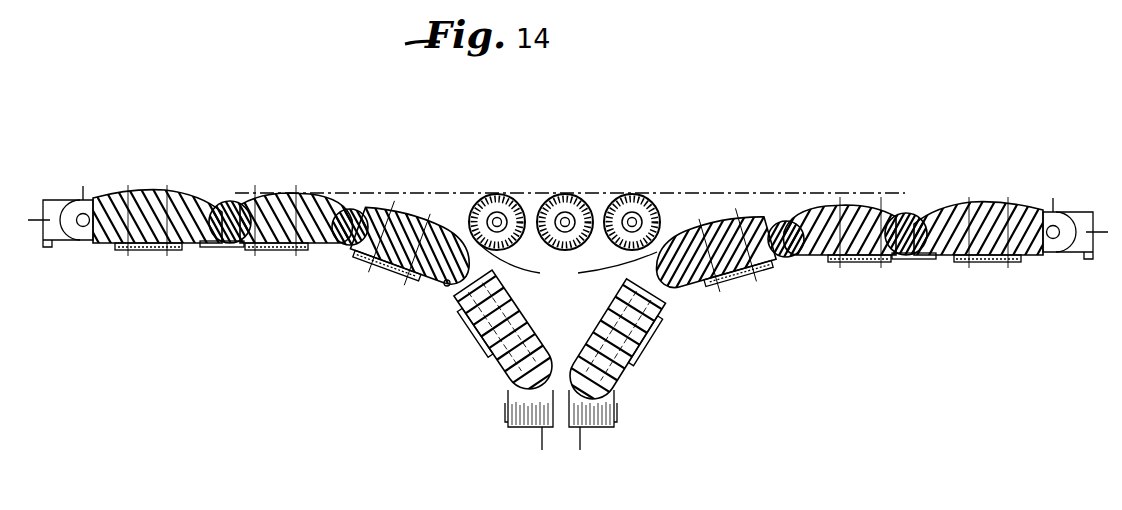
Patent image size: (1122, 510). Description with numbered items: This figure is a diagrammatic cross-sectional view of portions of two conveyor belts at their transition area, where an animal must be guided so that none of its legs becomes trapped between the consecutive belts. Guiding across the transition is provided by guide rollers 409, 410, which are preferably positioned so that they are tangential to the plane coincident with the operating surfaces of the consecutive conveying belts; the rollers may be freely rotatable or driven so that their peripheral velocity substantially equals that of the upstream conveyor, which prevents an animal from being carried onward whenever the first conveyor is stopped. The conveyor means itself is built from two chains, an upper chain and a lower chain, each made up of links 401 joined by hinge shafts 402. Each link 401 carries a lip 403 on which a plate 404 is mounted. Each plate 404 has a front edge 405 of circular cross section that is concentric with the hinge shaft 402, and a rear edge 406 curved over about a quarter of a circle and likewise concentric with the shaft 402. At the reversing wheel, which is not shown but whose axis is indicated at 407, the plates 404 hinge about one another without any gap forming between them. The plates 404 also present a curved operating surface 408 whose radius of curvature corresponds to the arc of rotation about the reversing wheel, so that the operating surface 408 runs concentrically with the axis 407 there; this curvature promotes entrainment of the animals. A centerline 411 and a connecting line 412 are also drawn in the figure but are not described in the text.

The link 401 is at (53, 241).
The hinge shaft 402 is at (84, 230).
The lip 403 is at (276, 250).
The plate 404 is at (277, 194).
The front edge 405 is at (212, 246).
The rear edge 406 is at (231, 200).
The axis of the reversing wheel 407 is at (394, 196).
The curved operating surface 408 is at (146, 190).
The guide roller 409 is at (498, 194).
The guide roller 410 is at (567, 194).
The center line 411 is at (432, 188).
The roller support curve 412 is at (567, 264).